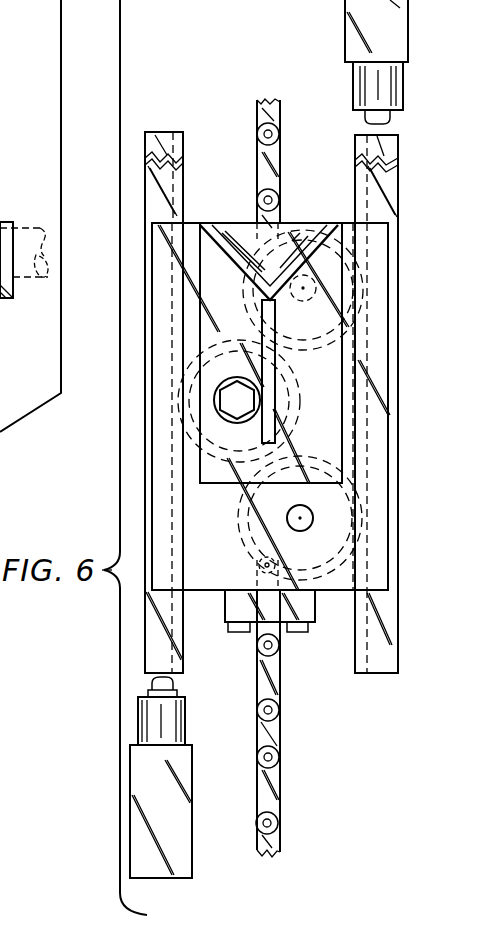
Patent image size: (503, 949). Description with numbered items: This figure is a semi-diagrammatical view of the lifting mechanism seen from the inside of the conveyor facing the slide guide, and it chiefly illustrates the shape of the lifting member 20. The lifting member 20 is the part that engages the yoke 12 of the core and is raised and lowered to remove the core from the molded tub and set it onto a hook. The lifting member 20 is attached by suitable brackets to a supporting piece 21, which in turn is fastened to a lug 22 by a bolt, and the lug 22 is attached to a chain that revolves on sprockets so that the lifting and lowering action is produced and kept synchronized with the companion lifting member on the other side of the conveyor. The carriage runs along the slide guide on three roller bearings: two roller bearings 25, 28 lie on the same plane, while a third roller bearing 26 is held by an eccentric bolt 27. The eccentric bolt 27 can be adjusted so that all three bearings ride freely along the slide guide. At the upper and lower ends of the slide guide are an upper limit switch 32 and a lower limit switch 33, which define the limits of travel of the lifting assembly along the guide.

The yoke 12 is at (30, 238).
The lifting member 20 is at (240, 258).
The supporting piece 21 is at (276, 370).
The lug 22 is at (280, 630).
The roller bearing 25 is at (320, 558).
The roller bearing 26 is at (240, 445).
The eccentric bolt 27 is at (248, 408).
The roller bearing 28 is at (312, 327).
The upper limit switch 32 is at (386, 29).
The lower limit switch 33 is at (168, 801).